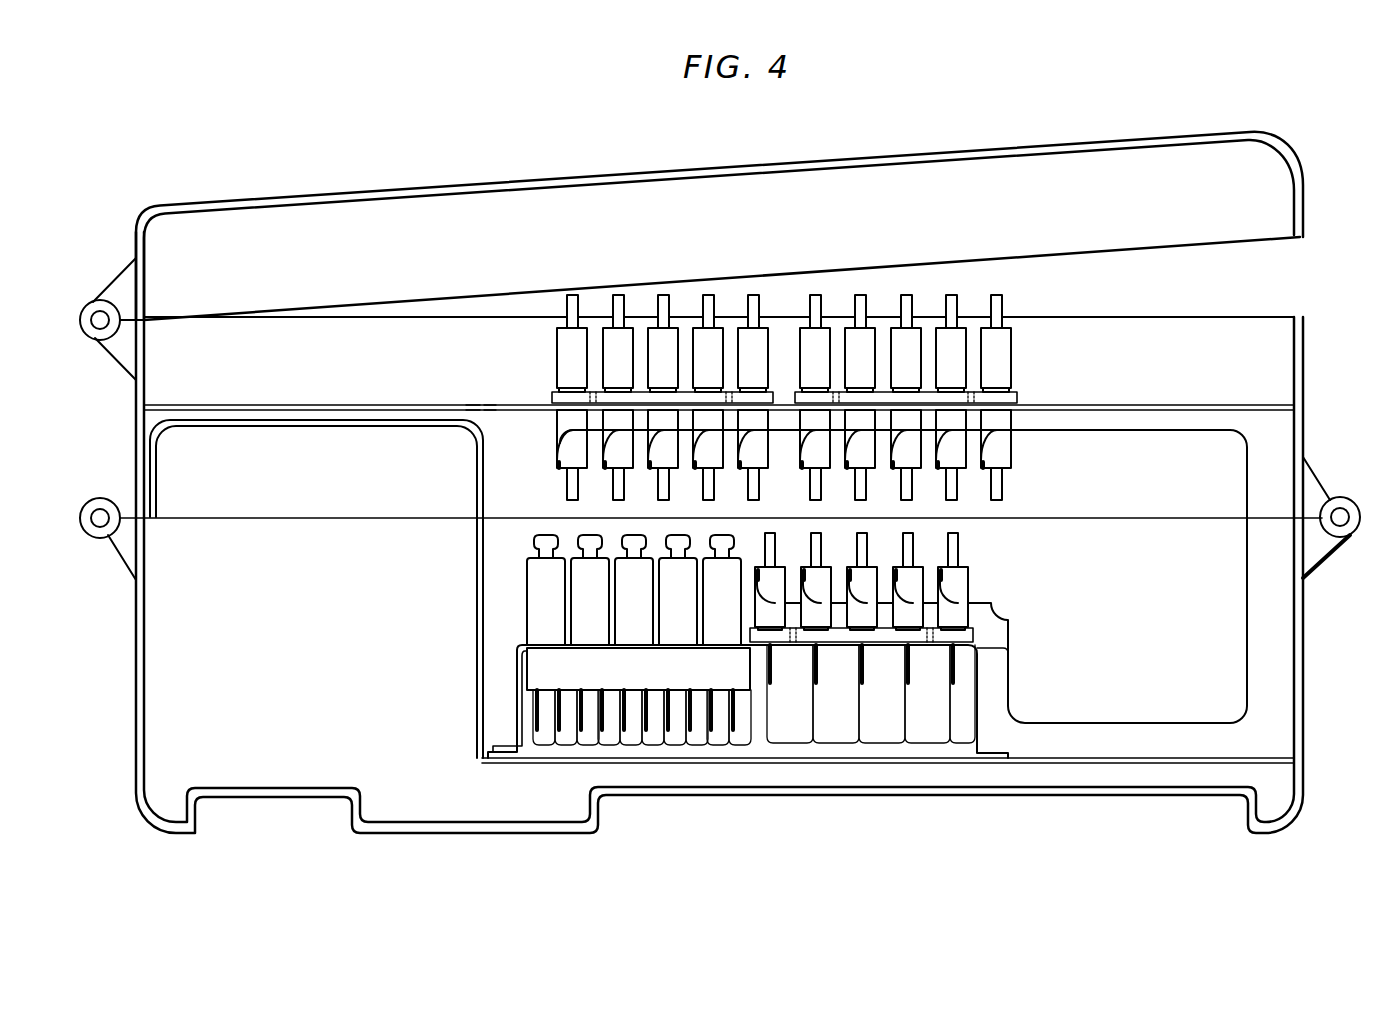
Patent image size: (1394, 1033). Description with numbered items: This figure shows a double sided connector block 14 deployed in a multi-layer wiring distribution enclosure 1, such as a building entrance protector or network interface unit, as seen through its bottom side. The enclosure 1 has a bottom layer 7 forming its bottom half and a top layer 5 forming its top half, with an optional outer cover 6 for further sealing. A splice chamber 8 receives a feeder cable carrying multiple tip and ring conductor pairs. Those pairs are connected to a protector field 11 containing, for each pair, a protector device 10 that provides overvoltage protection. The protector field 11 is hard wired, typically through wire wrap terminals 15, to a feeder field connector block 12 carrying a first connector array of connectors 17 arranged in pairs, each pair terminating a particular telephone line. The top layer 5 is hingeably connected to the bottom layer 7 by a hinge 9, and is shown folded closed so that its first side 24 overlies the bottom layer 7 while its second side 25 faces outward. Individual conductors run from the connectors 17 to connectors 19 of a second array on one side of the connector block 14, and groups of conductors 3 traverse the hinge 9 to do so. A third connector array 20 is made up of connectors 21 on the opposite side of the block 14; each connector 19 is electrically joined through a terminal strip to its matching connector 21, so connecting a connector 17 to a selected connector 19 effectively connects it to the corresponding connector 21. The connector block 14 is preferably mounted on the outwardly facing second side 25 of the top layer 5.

The multi-layer wiring distribution enclosure 1 is at (346, 164).
The groups of conductors 3 is at (1245, 483).
The top layer 5 is at (1222, 406).
The outer cover 6 is at (462, 186).
The bottom layer 7 is at (1276, 757).
The splice chamber 8 is at (166, 643).
The hinge 9 is at (1360, 531).
The protector device 10 is at (576, 595).
The protector field 11 is at (537, 672).
The feeder field connector block 12 is at (973, 636).
The double sided connector block 14 is at (1017, 398).
The wire wrap terminals 15 is at (790, 708).
The connectors 17 is at (950, 580).
The connectors 19 is at (1000, 455).
The third connector array 20 is at (1013, 253).
The connectors 21 is at (960, 372).
The first side 24 is at (490, 411).
The second side 25 is at (473, 405).